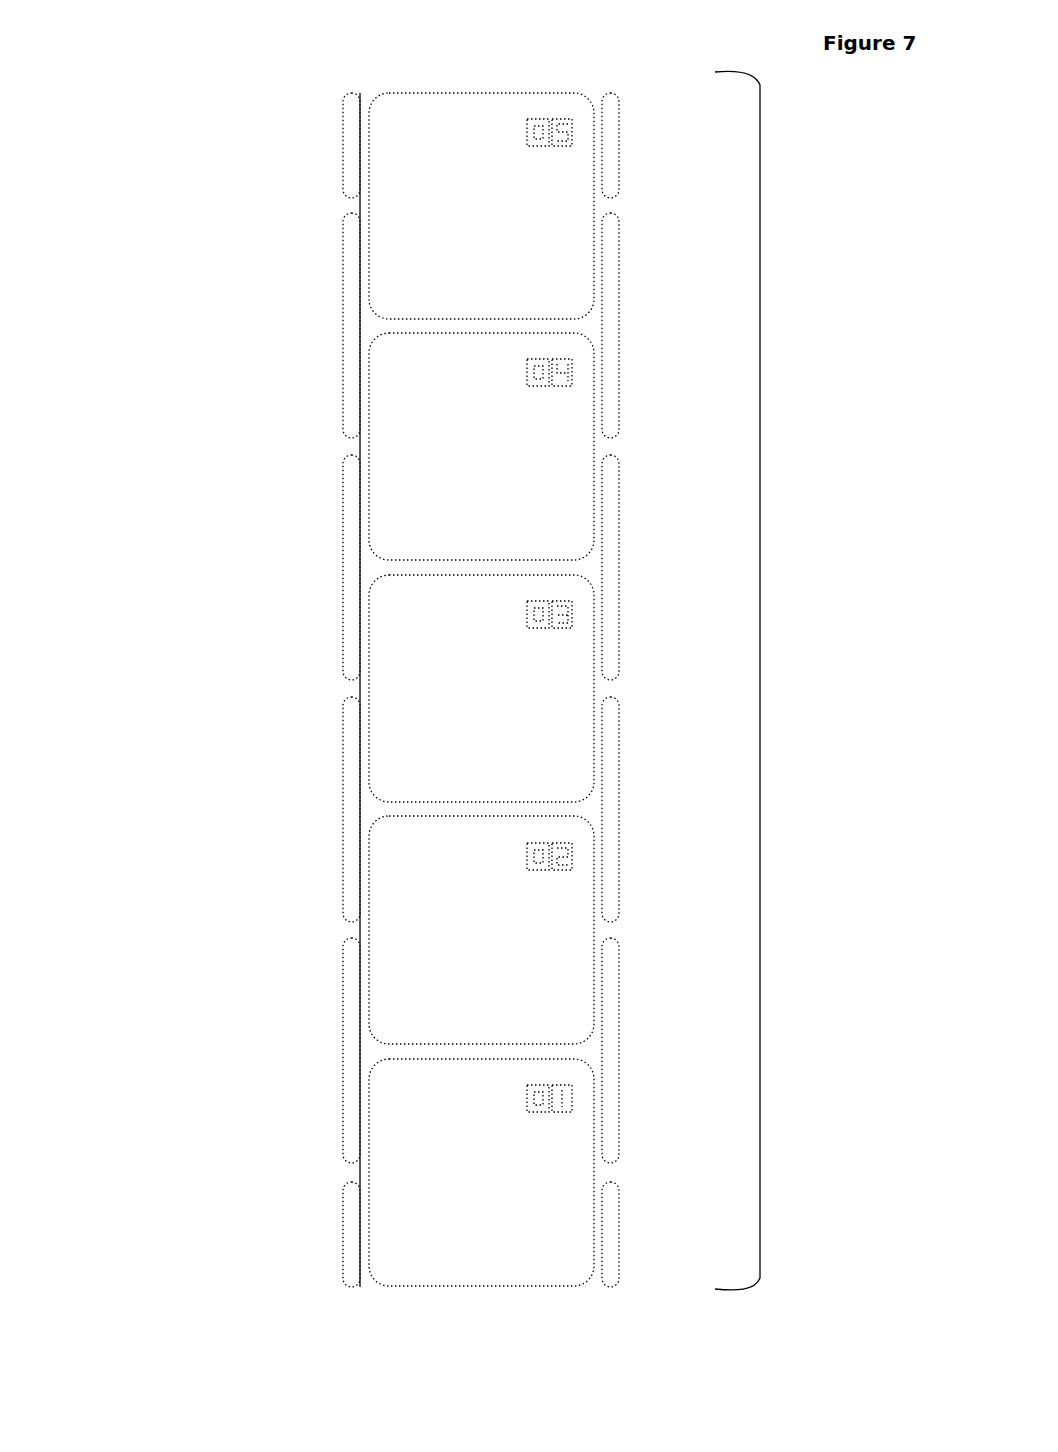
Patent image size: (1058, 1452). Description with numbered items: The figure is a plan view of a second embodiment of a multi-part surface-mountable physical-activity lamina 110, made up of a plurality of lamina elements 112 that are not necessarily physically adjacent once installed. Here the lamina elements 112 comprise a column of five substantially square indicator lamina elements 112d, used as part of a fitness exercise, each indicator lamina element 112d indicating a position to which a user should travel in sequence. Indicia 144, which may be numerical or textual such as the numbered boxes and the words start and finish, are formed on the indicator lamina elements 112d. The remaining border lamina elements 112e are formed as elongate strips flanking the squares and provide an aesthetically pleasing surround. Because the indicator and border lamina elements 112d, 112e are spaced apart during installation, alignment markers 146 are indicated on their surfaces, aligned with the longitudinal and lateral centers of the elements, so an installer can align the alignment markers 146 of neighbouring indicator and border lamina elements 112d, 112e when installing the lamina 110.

The lamina 110 is at (183, 153).
The lamina elements 112 is at (760, 676).
The indicator lamina elements 112d is at (438, 90).
The border lamina elements 112e is at (343, 240).
The indicia 144 is at (546, 108).
The alignment marker 146 is at (483, 342).